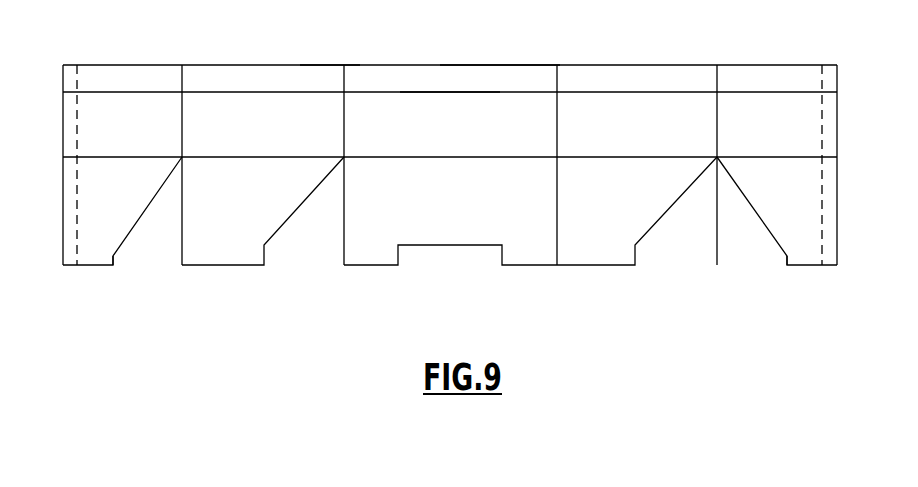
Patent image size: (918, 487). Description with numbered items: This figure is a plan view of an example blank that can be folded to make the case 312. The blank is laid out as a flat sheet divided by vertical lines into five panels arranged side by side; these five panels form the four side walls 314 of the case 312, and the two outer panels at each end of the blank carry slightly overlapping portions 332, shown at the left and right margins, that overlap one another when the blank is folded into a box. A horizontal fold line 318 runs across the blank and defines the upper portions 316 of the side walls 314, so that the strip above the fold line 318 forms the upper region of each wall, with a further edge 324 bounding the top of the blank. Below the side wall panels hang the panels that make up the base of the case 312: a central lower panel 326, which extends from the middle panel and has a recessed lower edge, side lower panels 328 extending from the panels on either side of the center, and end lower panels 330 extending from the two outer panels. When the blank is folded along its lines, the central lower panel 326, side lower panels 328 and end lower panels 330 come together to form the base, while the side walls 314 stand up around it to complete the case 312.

The case 312 is at (224, 300).
The side walls 314 is at (145, 92).
The upper portions 316 is at (483, 65).
The fold line 318 is at (446, 92).
The top panel edge 324 is at (331, 65).
The central lower panel 326 is at (385, 265).
The side lower panels 328 is at (253, 265).
The end lower panels 330 is at (112, 265).
The overlapping portions 332 is at (72, 265).